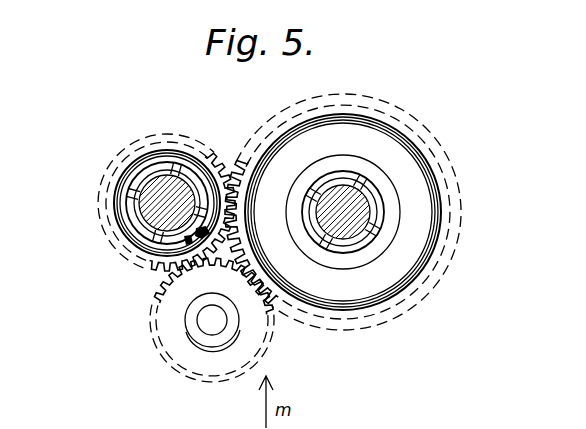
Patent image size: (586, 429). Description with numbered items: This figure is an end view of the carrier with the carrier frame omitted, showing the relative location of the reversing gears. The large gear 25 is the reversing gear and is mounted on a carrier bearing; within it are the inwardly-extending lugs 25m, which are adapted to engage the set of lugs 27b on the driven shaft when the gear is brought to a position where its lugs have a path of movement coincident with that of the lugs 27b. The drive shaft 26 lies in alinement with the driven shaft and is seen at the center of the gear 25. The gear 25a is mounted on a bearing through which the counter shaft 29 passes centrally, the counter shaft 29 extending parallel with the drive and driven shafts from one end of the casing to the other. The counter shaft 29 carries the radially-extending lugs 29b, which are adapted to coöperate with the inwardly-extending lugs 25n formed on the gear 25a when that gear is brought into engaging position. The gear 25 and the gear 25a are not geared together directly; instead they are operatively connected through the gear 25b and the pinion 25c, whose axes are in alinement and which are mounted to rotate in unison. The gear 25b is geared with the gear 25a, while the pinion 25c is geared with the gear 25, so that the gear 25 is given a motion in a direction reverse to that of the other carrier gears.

The gear 25 is at (424, 180).
The gear 25a is at (152, 158).
The gear 25b is at (168, 330).
The pinion 25c is at (236, 259).
The inwardly-extending lugs 25m is at (371, 187).
The inwardly-extending lugs 25n is at (123, 163).
The drive shaft 26 is at (376, 205).
The lugs 27b is at (370, 237).
The counter shaft 29 is at (153, 205).
The radially-extending lugs 29b is at (198, 189).